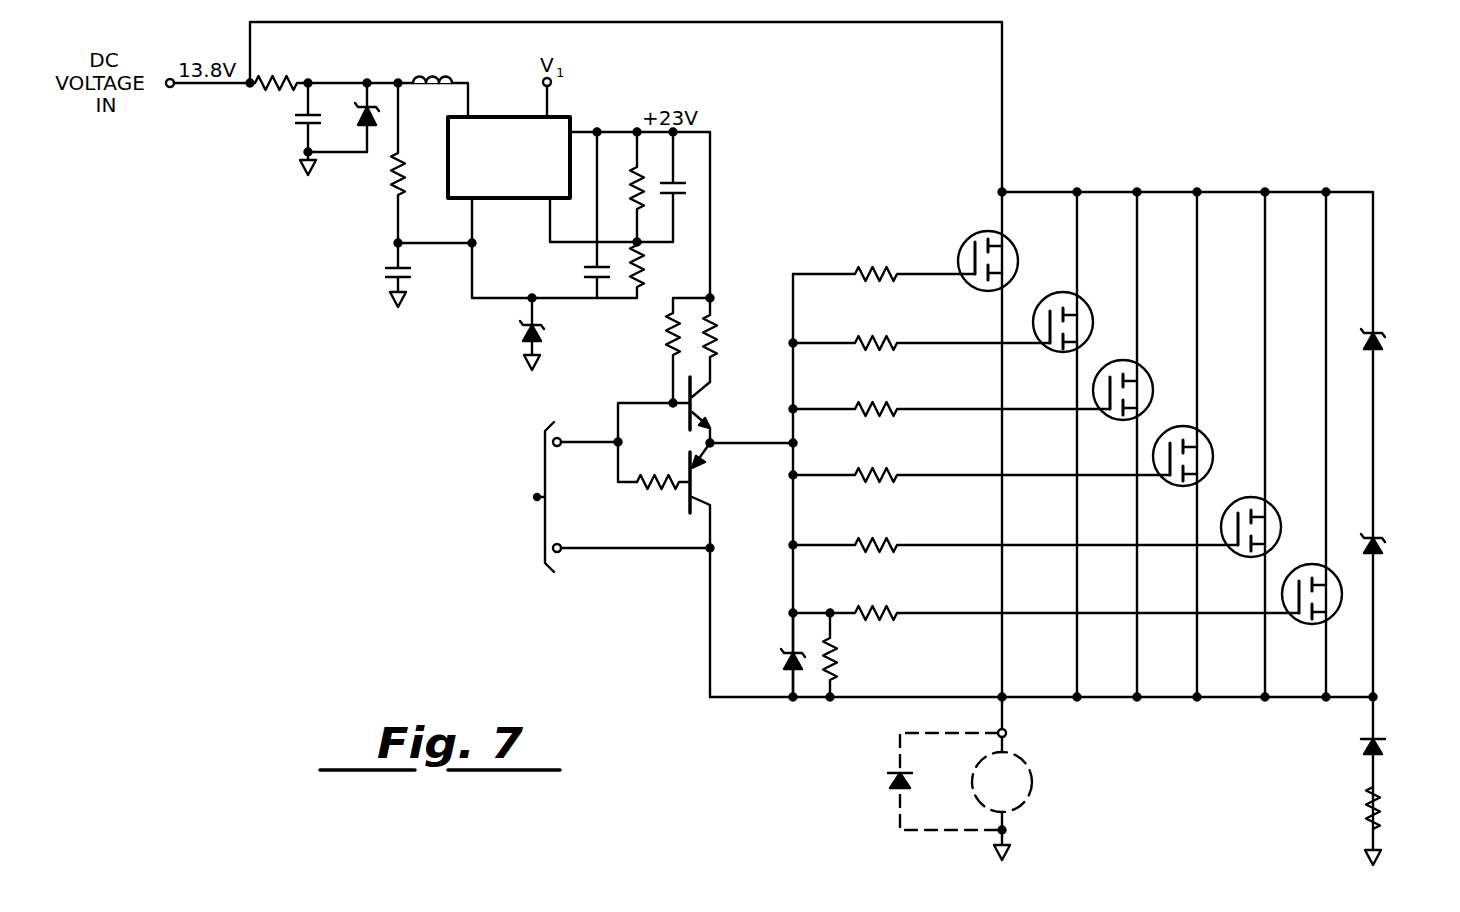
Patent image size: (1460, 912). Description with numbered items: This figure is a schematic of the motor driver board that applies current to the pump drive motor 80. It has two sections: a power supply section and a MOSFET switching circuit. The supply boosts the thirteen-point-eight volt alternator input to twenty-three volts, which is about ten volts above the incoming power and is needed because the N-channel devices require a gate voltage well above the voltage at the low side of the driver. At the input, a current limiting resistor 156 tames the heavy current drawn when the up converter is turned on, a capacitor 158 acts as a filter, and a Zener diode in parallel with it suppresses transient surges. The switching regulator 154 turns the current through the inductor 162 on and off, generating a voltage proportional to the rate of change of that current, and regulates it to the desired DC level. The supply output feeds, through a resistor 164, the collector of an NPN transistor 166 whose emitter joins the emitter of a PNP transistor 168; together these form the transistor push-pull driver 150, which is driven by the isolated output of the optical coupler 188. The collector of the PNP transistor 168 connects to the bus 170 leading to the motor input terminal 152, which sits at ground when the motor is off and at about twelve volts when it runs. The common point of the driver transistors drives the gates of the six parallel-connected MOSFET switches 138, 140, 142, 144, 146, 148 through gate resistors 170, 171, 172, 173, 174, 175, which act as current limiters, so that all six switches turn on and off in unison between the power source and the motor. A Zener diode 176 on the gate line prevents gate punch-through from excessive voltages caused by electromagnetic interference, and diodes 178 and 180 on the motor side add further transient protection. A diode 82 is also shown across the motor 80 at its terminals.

The pump drive motor 80 is at (1035, 781).
The diode 82 is at (890, 775).
The MOSFET switch 138 is at (972, 291).
The MOSFET switch 140 is at (1052, 353).
The MOSFET switch 142 is at (1113, 421).
The MOSFET switch 144 is at (1175, 487).
The MOSFET switch 146 is at (1237, 558).
The MOSFET switch 148 is at (1300, 626).
The transistor push-pull driver 150 is at (681, 459).
The motor input terminal 152 is at (1010, 733).
The switching regulator 154 is at (566, 110).
The current limiting resistor 156 is at (278, 76).
The capacitor 158 is at (290, 117).
The inductor 162 is at (430, 72).
The resistor 164 is at (712, 338).
The NPN transistor 166 is at (705, 398).
The PNP transistor 168 is at (700, 485).
The bus / gate resistor 170 is at (878, 268).
The gate resistor 171 is at (878, 336).
The gate resistor 172 is at (878, 403).
The gate resistor 173 is at (878, 470).
The gate resistor 174 is at (878, 538).
The gate resistor 175 is at (878, 607).
The Zener diode 176 is at (788, 652).
The diode 178 is at (1380, 328).
The diode 180 is at (1380, 535).
The optical coupler 188 is at (534, 497).